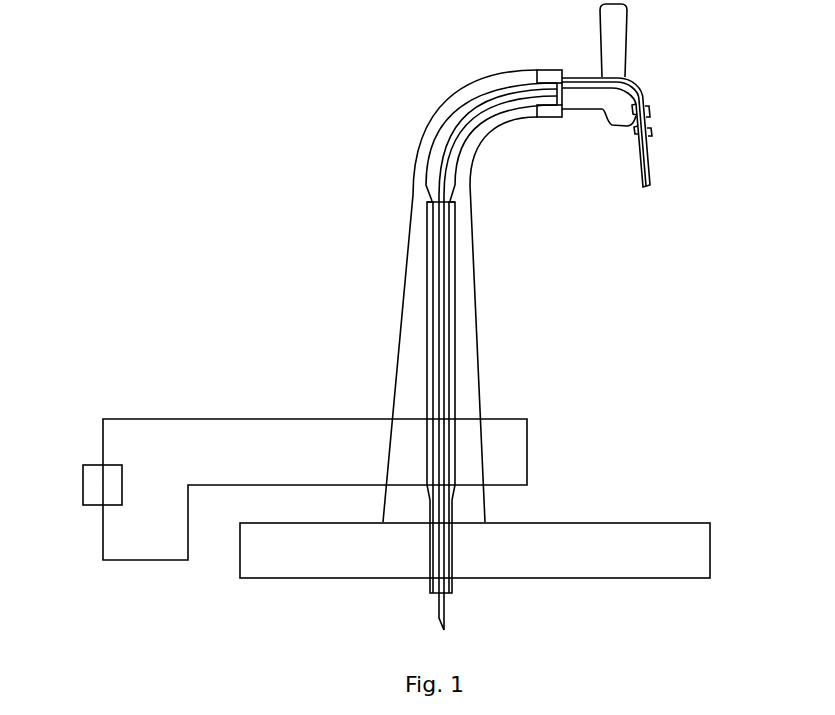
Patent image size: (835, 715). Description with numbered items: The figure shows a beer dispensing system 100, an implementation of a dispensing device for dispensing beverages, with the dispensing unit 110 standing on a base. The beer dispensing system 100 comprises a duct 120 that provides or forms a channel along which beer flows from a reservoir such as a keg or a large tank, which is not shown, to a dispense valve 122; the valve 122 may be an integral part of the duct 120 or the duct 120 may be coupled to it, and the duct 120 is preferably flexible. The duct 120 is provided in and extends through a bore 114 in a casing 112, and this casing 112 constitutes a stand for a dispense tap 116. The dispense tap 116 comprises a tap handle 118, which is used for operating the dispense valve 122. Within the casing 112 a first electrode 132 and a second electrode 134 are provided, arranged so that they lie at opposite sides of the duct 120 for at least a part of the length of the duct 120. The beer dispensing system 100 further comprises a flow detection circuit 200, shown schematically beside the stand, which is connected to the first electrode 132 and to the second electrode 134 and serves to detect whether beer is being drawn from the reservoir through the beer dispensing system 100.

The beer dispensing system 100 is at (77, 26).
The handpiece 110 is at (376, 86).
The casing 112 is at (417, 217).
The bore 114 is at (467, 128).
The dispense tap 116 is at (637, 82).
The tap handle 118 is at (615, 40).
The duct 120 is at (446, 145).
The dispense valve 122 is at (643, 112).
The first electrode 132 is at (427, 280).
The second electrode 134 is at (455, 367).
The flow detection circuit 200 is at (87, 488).